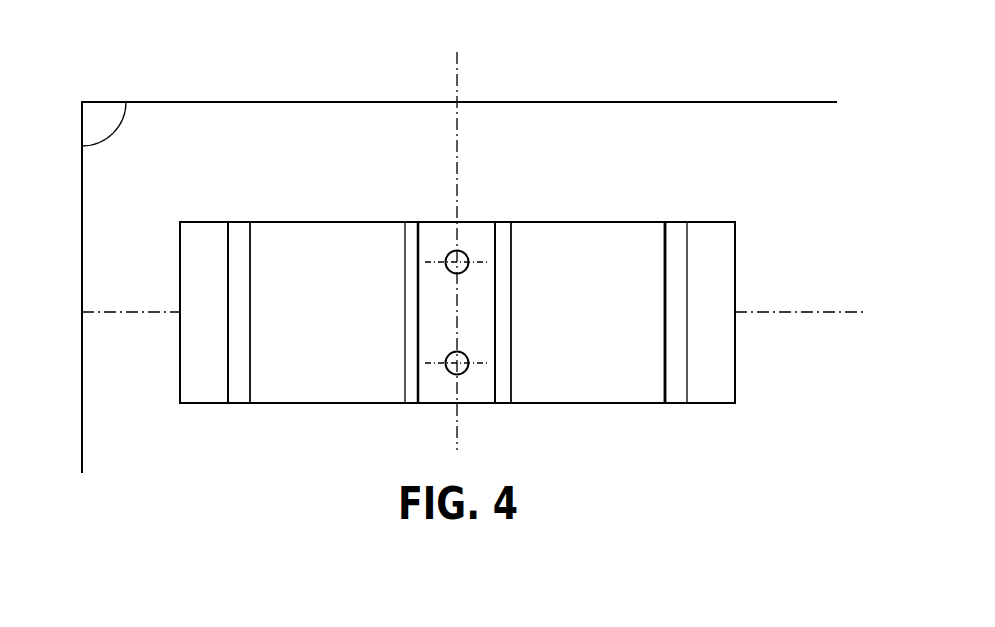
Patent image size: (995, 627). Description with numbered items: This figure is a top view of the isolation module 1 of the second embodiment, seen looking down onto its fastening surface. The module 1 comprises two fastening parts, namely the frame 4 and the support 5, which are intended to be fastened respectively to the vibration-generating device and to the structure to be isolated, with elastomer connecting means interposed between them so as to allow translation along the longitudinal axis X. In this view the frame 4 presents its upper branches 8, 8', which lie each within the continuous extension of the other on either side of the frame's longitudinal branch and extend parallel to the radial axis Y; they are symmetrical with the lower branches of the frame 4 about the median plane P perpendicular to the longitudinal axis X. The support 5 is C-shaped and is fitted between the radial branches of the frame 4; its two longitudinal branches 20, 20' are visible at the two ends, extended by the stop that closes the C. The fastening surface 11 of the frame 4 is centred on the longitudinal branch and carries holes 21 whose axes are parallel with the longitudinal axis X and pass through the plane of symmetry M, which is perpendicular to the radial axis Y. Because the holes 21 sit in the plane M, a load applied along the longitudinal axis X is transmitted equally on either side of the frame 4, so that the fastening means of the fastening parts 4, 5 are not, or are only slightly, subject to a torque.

The isolation module 1 is at (680, 201).
The frame 4 is at (608, 212).
The support 5 is at (750, 378).
The upper branch 8 is at (545, 281).
The upper branch 8' is at (266, 281).
The fastening surface 11 is at (431, 242).
The longitudinal branch 20 is at (729, 300).
The longitudinal branch 20' is at (185, 328).
The hole 21 is at (461, 254).
The median plane P is at (102, 120).
The longitudinal axis X is at (461, 80).
The plane of symmetry M is at (495, 68).
The radial axis Y is at (820, 312).